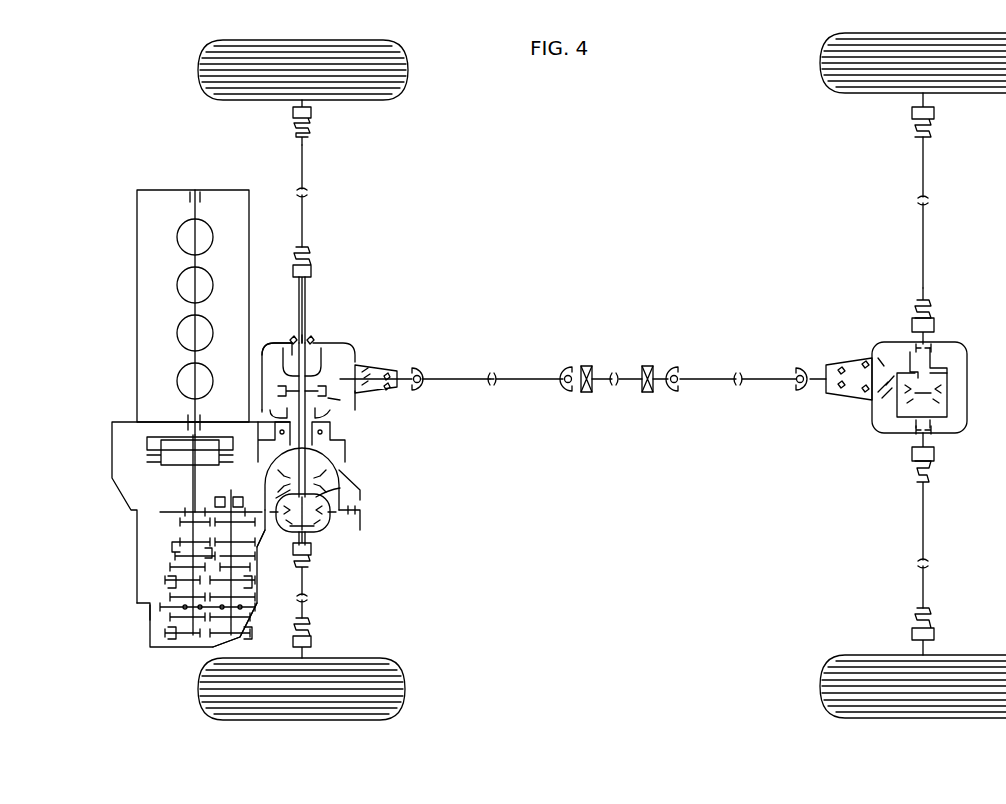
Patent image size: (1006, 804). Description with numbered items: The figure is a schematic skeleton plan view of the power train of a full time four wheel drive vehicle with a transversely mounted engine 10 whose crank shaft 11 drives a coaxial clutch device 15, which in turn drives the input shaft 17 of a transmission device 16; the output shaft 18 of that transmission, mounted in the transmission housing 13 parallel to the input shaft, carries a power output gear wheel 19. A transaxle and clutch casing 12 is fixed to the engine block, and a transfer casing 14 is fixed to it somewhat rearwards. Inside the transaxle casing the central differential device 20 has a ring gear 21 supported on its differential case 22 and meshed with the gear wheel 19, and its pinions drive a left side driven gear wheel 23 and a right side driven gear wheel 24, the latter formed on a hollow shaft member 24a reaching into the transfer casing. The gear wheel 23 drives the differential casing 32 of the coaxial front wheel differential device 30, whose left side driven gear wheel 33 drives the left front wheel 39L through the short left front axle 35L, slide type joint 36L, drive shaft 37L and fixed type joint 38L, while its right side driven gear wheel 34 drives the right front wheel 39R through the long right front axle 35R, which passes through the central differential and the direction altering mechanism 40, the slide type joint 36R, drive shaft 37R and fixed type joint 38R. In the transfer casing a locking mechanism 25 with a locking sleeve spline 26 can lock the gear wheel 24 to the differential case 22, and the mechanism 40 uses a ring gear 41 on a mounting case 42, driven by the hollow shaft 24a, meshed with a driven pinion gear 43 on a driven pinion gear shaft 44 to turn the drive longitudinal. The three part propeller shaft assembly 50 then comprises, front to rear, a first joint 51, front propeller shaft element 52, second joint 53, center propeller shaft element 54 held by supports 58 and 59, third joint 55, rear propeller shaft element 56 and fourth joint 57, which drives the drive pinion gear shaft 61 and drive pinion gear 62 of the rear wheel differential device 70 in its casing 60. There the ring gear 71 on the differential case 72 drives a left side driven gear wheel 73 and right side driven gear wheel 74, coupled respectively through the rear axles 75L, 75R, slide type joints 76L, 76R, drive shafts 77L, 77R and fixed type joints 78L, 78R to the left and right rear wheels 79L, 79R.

The engine 10 is at (128, 287).
The crank shaft 11 is at (188, 420).
The transaxle and clutch casing 12 is at (131, 492).
The transmission housing 13 is at (148, 607).
The transfer casing 14 is at (270, 342).
The clutch device 15 is at (126, 439).
The transmission device 16 is at (148, 557).
The input shaft 17 is at (192, 538).
The output shaft 18 is at (256, 604).
The power output gear wheel 19 is at (214, 504).
The central differential device 20 is at (348, 472).
The final reduction ring gear 21 is at (364, 516).
The differential case 22 is at (360, 490).
The left side driven gear wheel 23 is at (340, 490).
The right side driven gear wheel 24 is at (332, 440).
The hollow shaft member 24a is at (268, 412).
The locking mechanism 25 is at (342, 400).
The locking sleeve spline 26 is at (278, 386).
The front wheel differential device 30 is at (356, 526).
The differential casing 32 is at (332, 530).
The left side driven gear wheel 33 is at (264, 542).
The right side driven gear wheel 34 is at (278, 496).
The left side front vehicle axle 35L is at (311, 550).
The right front vehicle axle 35R is at (304, 285).
The left side slide type constant velocity joint 36L is at (306, 565).
The right side slide type constant velocity joint 36R is at (296, 274).
The left side drive shaft 37L is at (306, 610).
The right side drive shaft 37R is at (300, 160).
The left side fixed type constant velocity joint 38L is at (312, 643).
The right side fixed type constant velocity joint 38R is at (311, 113).
The left front wheel 39L is at (405, 688).
The right front wheel 39R is at (408, 90).
The rear wheel drive direction altering mechanism 40 is at (344, 343).
The ring gear 41 is at (276, 350).
The mounting case 42 is at (312, 342).
The driven pinion gear 43 is at (360, 364).
The driven pinion gear shaft 44 is at (406, 376).
The three part propeller shaft assembly 50 is at (628, 315).
The first joint 51 is at (420, 391).
The front propeller shaft element 52 is at (474, 374).
The second joint 53 is at (566, 391).
The center propeller shaft element 54 is at (604, 382).
The third joint 55 is at (672, 391).
The rear propeller shaft element 56 is at (722, 374).
The fourth joint 57 is at (796, 391).
The support 58 is at (586, 366).
The support 59 is at (650, 366).
The casing 60 is at (866, 344).
The drive pinion gear shaft 61 is at (828, 368).
The drive pinion gear 62 is at (876, 396).
The rear wheel differential device 70 is at (891, 444).
The ring gear 71 is at (948, 395).
The differential case 72 is at (944, 368).
The left side driven gear wheel 73 is at (936, 424).
The right side driven gear wheel 74 is at (912, 368).
The left side rear vehicle axle 75L is at (934, 450).
The right side rear vehicle axle 75R is at (934, 332).
The left side slide type constant velocity joint 76L is at (915, 470).
The right side slide type constant velocity joint 76R is at (931, 318).
The left side drive shaft 77L is at (923, 530).
The right side drive shaft 77R is at (924, 248).
The left side fixed type constant velocity joint 78L is at (912, 636).
The right side fixed type constant velocity joint 78R is at (912, 112).
The left rear wheel 79L is at (820, 690).
The right rear wheel 79R is at (822, 66).